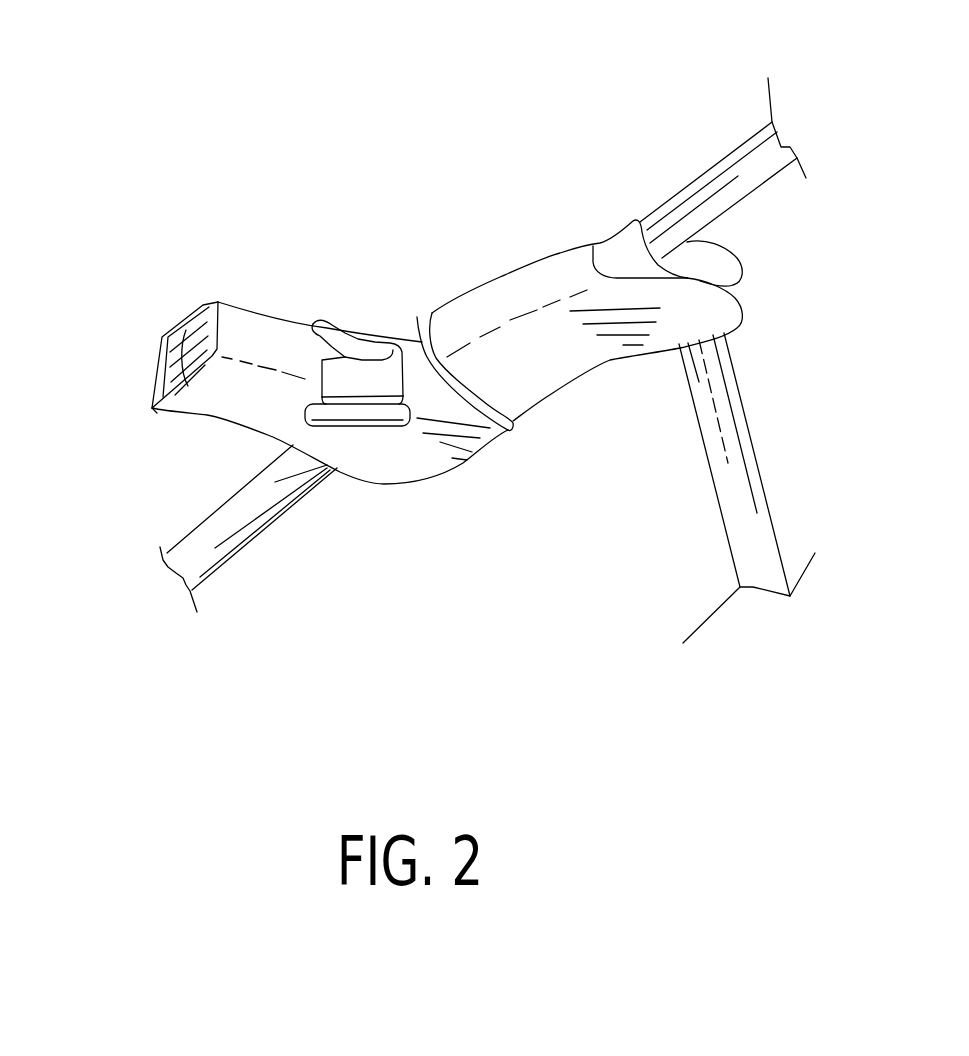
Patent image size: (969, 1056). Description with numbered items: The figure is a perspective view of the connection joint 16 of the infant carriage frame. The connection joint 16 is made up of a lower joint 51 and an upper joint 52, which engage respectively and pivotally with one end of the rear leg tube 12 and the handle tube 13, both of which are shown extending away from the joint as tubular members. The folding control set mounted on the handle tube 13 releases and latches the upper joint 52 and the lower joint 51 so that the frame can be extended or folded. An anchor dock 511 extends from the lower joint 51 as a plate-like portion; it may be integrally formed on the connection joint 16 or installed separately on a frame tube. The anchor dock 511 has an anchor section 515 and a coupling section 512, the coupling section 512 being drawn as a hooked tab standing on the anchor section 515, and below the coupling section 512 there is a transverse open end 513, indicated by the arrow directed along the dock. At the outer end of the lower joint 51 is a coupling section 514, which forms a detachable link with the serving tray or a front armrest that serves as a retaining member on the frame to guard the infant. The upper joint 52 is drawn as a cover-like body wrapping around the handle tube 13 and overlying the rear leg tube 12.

The rear leg tube 12 is at (740, 467).
The handle tube 13 is at (663, 223).
The connection joint 16 is at (437, 133).
The lower joint 51 is at (443, 435).
The anchor dock 511 is at (253, 326).
The coupling section 512 is at (343, 340).
The transverse open end 513 is at (287, 347).
The coupling section 514 is at (165, 332).
The anchor section 515 is at (363, 445).
The upper joint 52 is at (488, 310).